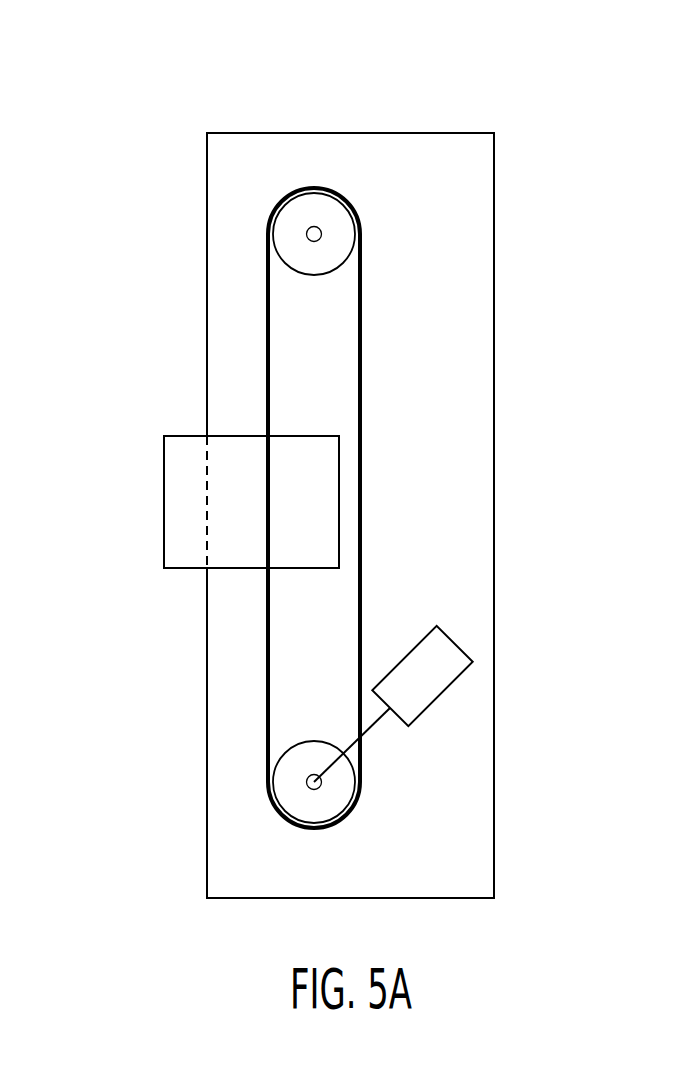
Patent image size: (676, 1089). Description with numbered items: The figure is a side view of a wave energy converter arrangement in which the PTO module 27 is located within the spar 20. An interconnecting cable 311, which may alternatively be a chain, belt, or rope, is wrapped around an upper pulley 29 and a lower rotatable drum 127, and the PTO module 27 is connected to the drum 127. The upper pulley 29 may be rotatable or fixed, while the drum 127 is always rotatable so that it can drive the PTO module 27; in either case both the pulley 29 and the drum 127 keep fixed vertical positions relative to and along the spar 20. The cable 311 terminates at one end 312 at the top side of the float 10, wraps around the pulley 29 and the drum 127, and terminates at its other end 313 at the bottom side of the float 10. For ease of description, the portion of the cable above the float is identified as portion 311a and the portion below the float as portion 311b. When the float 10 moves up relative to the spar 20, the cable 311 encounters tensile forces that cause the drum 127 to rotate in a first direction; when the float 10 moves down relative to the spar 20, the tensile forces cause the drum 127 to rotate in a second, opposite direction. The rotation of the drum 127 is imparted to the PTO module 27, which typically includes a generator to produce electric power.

The spar 20 is at (407, 150).
The upper pulley 29 is at (285, 232).
The cable 311 is at (363, 381).
The portion of the cable above the float 311a is at (265, 322).
The portion of the cable below the float 311b is at (265, 665).
The one end of the cable 312 is at (266, 435).
The other end of the cable 313 is at (265, 572).
The float 10 is at (173, 494).
The lower rotatable drum 127 is at (285, 778).
The PTO module 27 is at (453, 636).